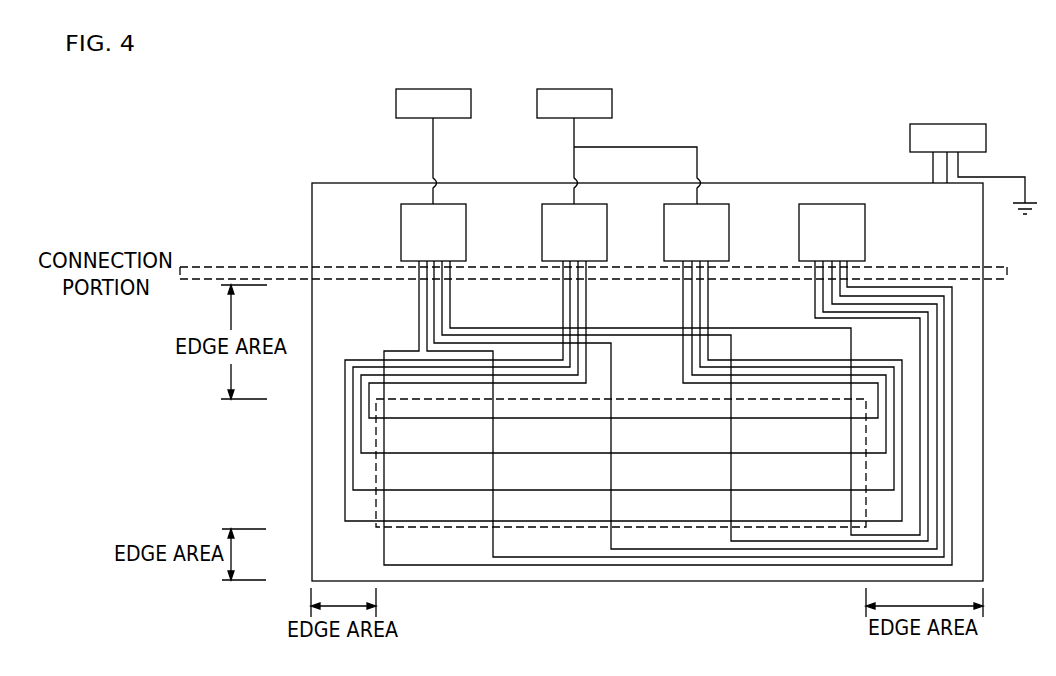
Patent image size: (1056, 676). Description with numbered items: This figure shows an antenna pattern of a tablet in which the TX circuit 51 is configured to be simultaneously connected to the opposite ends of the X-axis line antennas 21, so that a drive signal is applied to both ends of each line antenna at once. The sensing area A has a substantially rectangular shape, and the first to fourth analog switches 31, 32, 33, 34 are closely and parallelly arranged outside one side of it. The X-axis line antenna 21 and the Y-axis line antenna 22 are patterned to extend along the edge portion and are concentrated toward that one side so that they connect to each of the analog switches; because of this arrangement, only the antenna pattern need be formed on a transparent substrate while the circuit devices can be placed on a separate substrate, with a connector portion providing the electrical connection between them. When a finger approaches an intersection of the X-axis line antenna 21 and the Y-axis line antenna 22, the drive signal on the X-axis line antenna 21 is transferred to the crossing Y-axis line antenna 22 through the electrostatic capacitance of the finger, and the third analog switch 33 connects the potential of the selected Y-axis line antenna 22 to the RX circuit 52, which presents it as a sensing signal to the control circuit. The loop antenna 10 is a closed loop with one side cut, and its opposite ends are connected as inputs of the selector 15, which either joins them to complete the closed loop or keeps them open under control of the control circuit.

The loop antenna 10 is at (312, 432).
The selector 15 is at (955, 122).
The X-axis line antenna 21 is at (400, 490).
The Y-axis line antenna 22 is at (384, 545).
The first analog switch 31 is at (542, 232).
The second analog switch 32 is at (729, 232).
The third analog switch 33 is at (401, 243).
The fourth analog switch 34 is at (865, 232).
The TX circuit 51 is at (580, 87).
The RX circuit 52 is at (439, 87).
The sensing area A is at (465, 529).